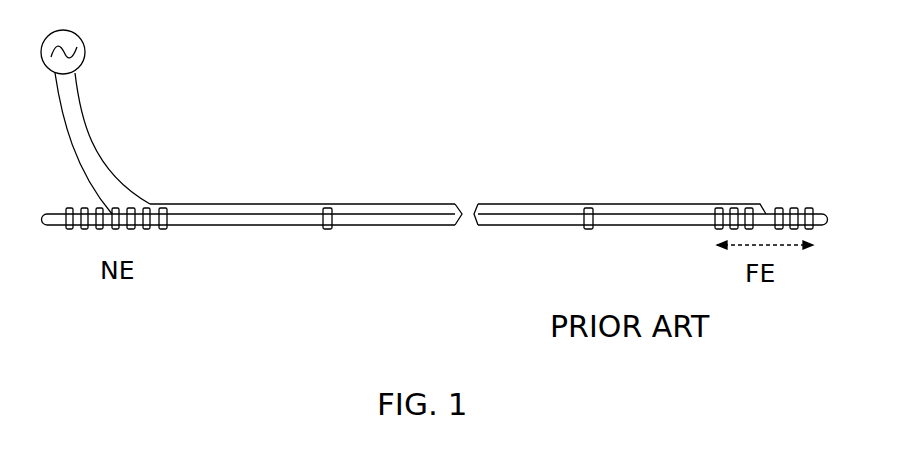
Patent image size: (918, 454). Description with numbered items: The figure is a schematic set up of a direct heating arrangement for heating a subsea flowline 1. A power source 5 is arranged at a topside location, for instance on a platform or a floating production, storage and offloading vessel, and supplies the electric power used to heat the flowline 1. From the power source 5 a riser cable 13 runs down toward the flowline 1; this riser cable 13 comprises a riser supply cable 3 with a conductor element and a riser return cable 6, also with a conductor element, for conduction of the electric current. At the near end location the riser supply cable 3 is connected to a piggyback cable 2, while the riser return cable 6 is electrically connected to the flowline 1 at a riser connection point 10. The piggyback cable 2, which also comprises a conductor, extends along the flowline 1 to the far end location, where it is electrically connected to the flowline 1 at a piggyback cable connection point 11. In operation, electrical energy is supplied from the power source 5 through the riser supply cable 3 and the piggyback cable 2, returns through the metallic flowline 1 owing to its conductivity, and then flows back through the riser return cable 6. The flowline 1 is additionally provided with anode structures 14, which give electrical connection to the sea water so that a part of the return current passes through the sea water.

The flowline 1 is at (263, 220).
The piggyback cable 2 is at (603, 205).
The riser supply cable 3 is at (118, 185).
The power source 5 is at (84, 41).
The riser return cable 6 is at (68, 152).
The riser connection point 10 is at (110, 232).
The piggyback cable connection point 11 is at (766, 213).
The riser cable 13 is at (100, 144).
The anode structures 14 is at (161, 230).